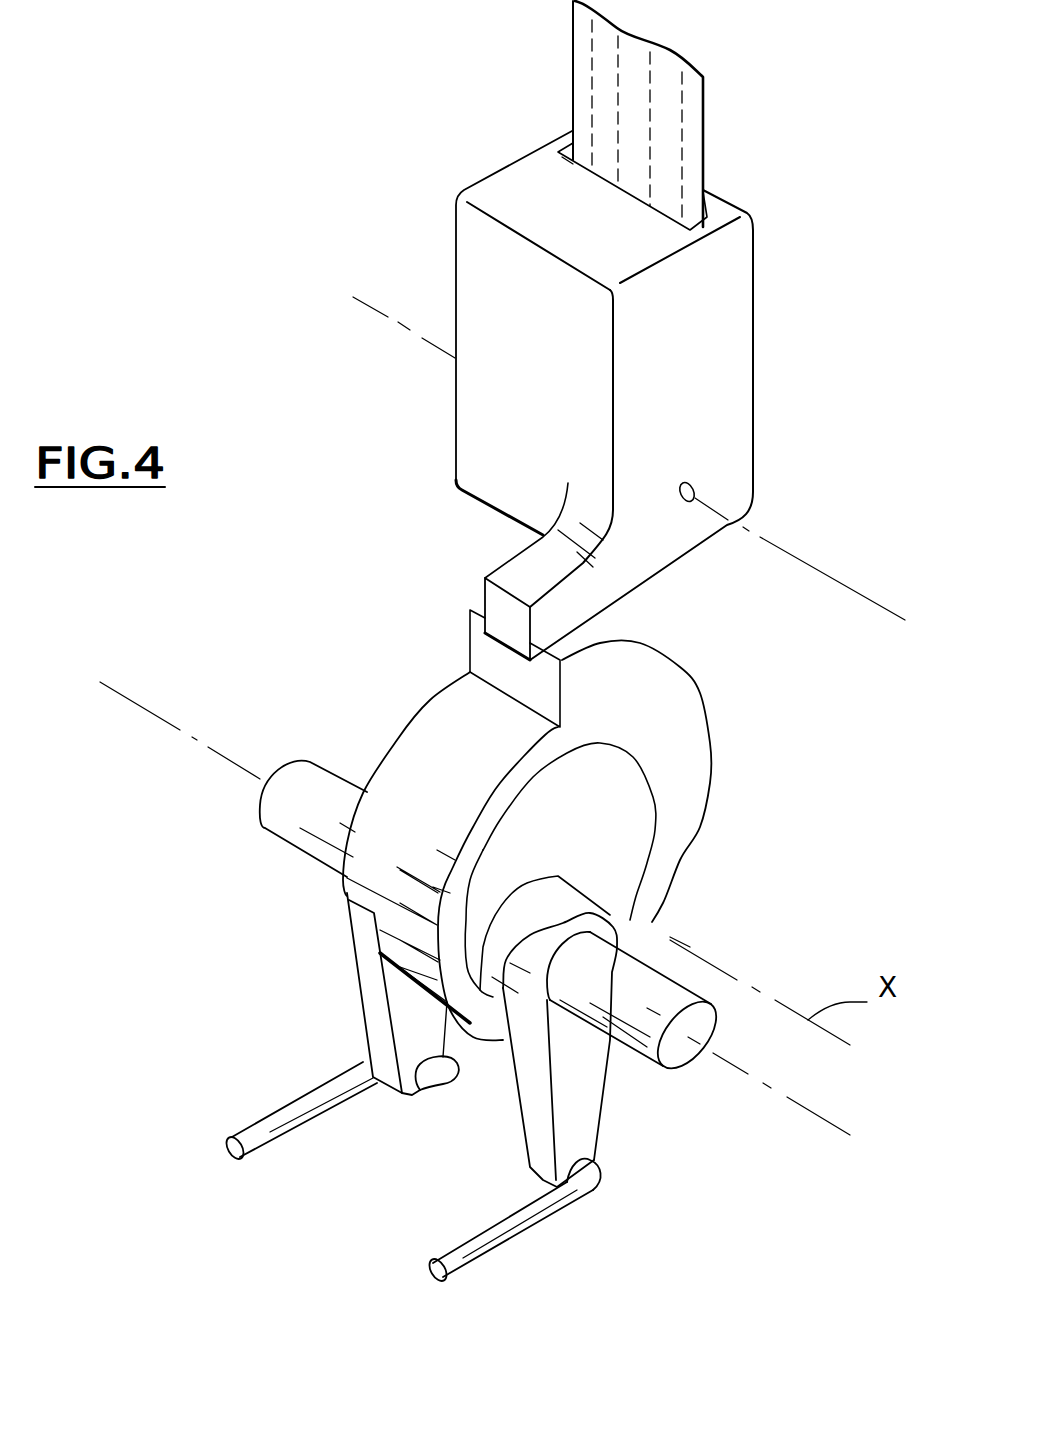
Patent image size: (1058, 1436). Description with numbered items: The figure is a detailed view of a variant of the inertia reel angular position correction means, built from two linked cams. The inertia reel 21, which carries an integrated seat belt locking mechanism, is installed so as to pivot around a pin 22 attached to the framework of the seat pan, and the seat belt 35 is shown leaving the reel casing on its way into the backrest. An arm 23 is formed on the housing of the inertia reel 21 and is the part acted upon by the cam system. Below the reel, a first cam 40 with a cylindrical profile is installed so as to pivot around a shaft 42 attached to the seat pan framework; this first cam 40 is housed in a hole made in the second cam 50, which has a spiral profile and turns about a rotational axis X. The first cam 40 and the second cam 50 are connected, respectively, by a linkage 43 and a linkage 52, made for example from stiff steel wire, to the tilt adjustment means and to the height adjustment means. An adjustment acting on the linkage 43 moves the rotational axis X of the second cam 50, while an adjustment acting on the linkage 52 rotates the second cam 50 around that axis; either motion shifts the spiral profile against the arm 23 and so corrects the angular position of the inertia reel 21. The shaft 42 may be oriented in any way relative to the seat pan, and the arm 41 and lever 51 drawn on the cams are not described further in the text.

The inertia reel 21 is at (718, 317).
The pin 22 is at (793, 545).
The arm 23 is at (513, 573).
The seat belt 35 is at (695, 137).
The first cam 40 is at (623, 840).
The lever arm 41 is at (582, 1088).
The shaft 42 is at (800, 1105).
The linkage 43 is at (535, 1222).
The second cam 50 is at (442, 732).
The lever arm 51 is at (373, 993).
The linkage 52 is at (298, 1110).